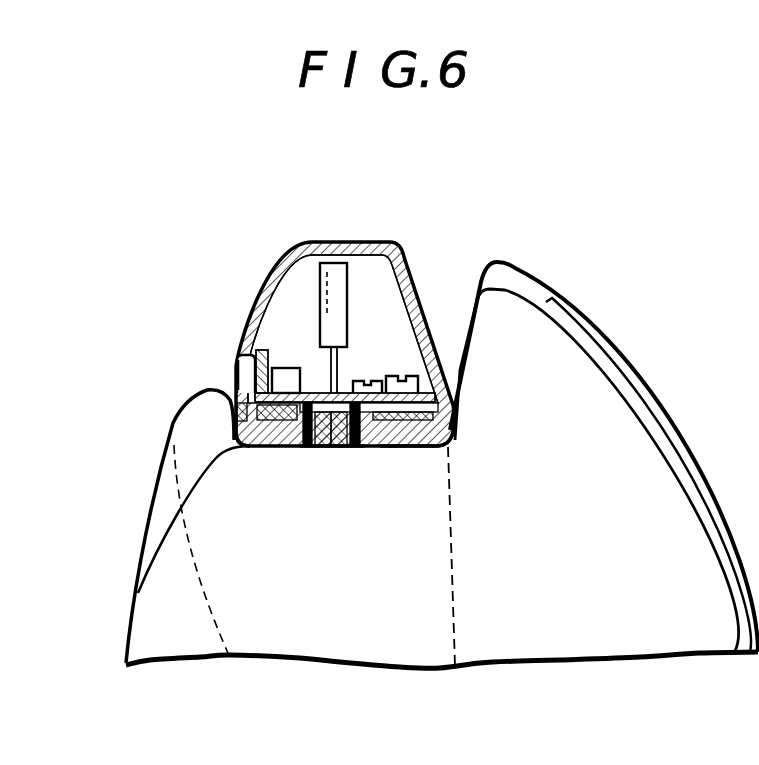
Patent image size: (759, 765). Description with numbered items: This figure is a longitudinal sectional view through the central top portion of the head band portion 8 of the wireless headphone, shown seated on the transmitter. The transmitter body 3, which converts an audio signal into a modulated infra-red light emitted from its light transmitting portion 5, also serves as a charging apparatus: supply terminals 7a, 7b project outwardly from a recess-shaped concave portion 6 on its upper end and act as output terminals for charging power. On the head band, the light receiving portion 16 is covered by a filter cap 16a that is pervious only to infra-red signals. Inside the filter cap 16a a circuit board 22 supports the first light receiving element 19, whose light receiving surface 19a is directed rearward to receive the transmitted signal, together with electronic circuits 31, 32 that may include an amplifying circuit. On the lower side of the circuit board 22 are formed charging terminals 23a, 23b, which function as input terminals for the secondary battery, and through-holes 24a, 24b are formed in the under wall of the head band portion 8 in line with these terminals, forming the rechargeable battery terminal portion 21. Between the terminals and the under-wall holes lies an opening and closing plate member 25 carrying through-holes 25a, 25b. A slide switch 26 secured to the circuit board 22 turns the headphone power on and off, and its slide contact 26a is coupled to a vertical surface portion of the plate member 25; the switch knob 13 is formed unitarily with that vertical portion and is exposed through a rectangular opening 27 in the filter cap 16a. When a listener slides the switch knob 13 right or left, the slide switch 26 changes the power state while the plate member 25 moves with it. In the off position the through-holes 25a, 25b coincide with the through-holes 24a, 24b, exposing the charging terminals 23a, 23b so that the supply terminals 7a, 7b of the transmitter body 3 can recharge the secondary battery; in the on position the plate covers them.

The transmitter body 3 is at (143, 537).
The light transmitting portion 5 is at (667, 432).
The recess-shaped concave portion 6 is at (393, 447).
The head band portion 8 is at (455, 593).
The switch knob 13 is at (236, 358).
The light receiving portion 16 is at (278, 252).
The filter cap 16a is at (392, 242).
The first light receiving element 19 is at (337, 268).
The light receiving surface 19a is at (322, 272).
The rechargeable battery terminal portion 21 is at (347, 452).
The circuit board 22 is at (410, 377).
The charging terminal 23a is at (455, 403).
The charging terminal 23b is at (245, 437).
The through-hole 24a is at (363, 448).
The through-hole 24b is at (308, 448).
The opening and closing plate member 25 is at (237, 417).
The through-hole 25a is at (397, 448).
The through-hole 25b is at (267, 450).
The slide switch 26 is at (277, 348).
The slide contact 26a is at (258, 350).
The rectangular opening 27 is at (237, 378).
The electronic circuit 31 is at (368, 380).
The electronic circuit 32 is at (340, 370).
The supply terminal 7a is at (338, 448).
The supply terminal 7b is at (283, 448).